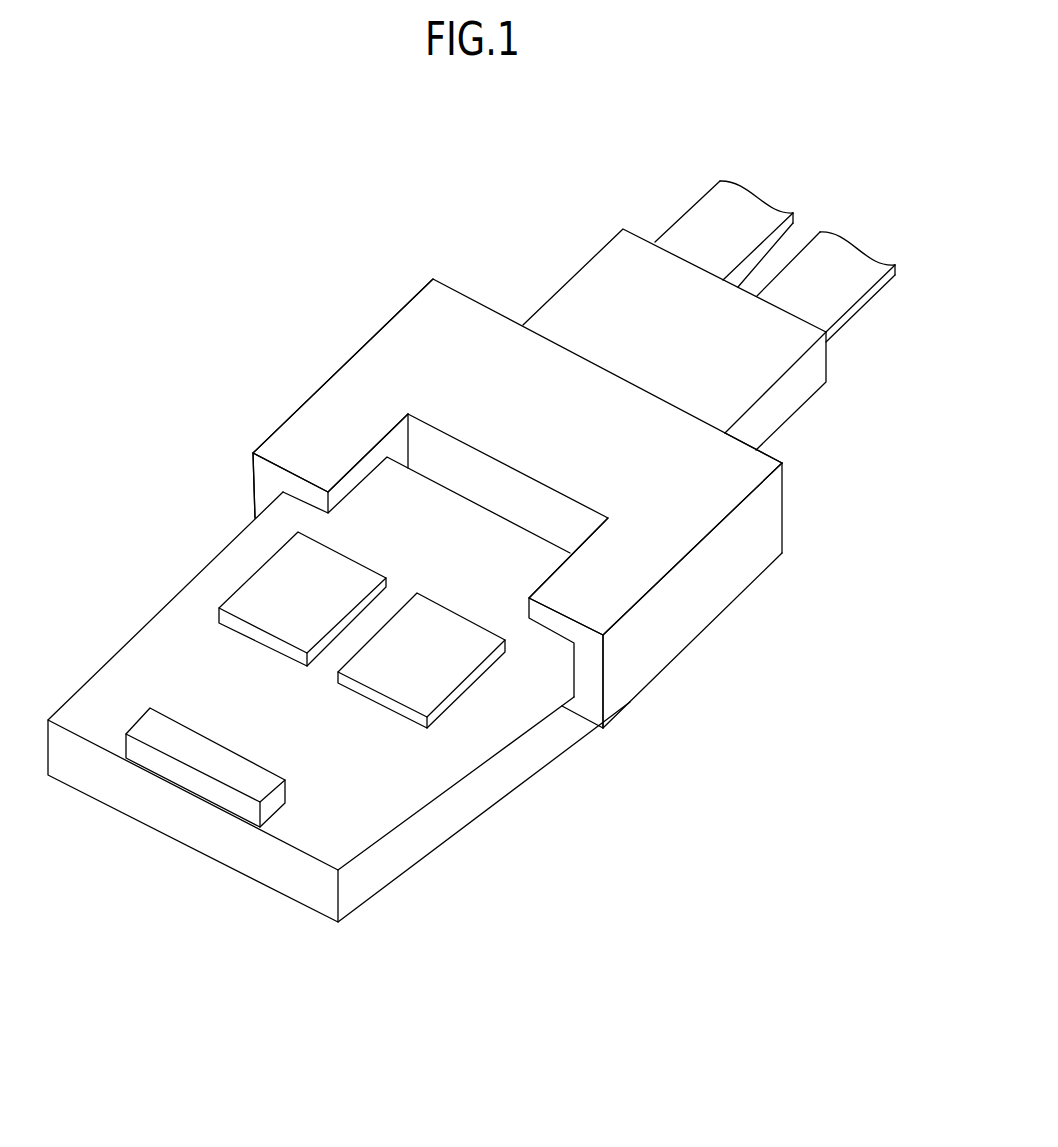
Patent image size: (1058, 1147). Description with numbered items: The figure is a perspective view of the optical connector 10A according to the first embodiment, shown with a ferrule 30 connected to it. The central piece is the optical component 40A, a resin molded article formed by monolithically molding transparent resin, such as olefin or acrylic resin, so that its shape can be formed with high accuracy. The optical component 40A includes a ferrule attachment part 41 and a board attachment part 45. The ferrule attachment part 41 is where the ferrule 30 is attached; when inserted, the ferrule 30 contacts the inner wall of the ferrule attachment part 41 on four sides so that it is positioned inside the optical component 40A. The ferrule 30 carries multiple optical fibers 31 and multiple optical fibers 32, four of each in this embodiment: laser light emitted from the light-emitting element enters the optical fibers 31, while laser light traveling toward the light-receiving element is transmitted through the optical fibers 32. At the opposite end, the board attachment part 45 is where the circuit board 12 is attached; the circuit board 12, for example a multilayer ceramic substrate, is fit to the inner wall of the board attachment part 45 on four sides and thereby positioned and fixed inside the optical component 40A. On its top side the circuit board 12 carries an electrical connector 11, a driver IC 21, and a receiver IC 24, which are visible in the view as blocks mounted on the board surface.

The optical connector 10A is at (448, 194).
The electrical connector 11 is at (198, 762).
The circuit board 12 is at (427, 777).
The driver IC 21 is at (445, 662).
The receiver IC 24 is at (283, 567).
The ferrule 30 is at (803, 401).
The optical fibers 31 is at (832, 285).
The optical fibers 32 is at (716, 218).
The optical component 40A is at (738, 587).
The ferrule attachment part 41 is at (743, 473).
The board attachment part 45 is at (293, 440).